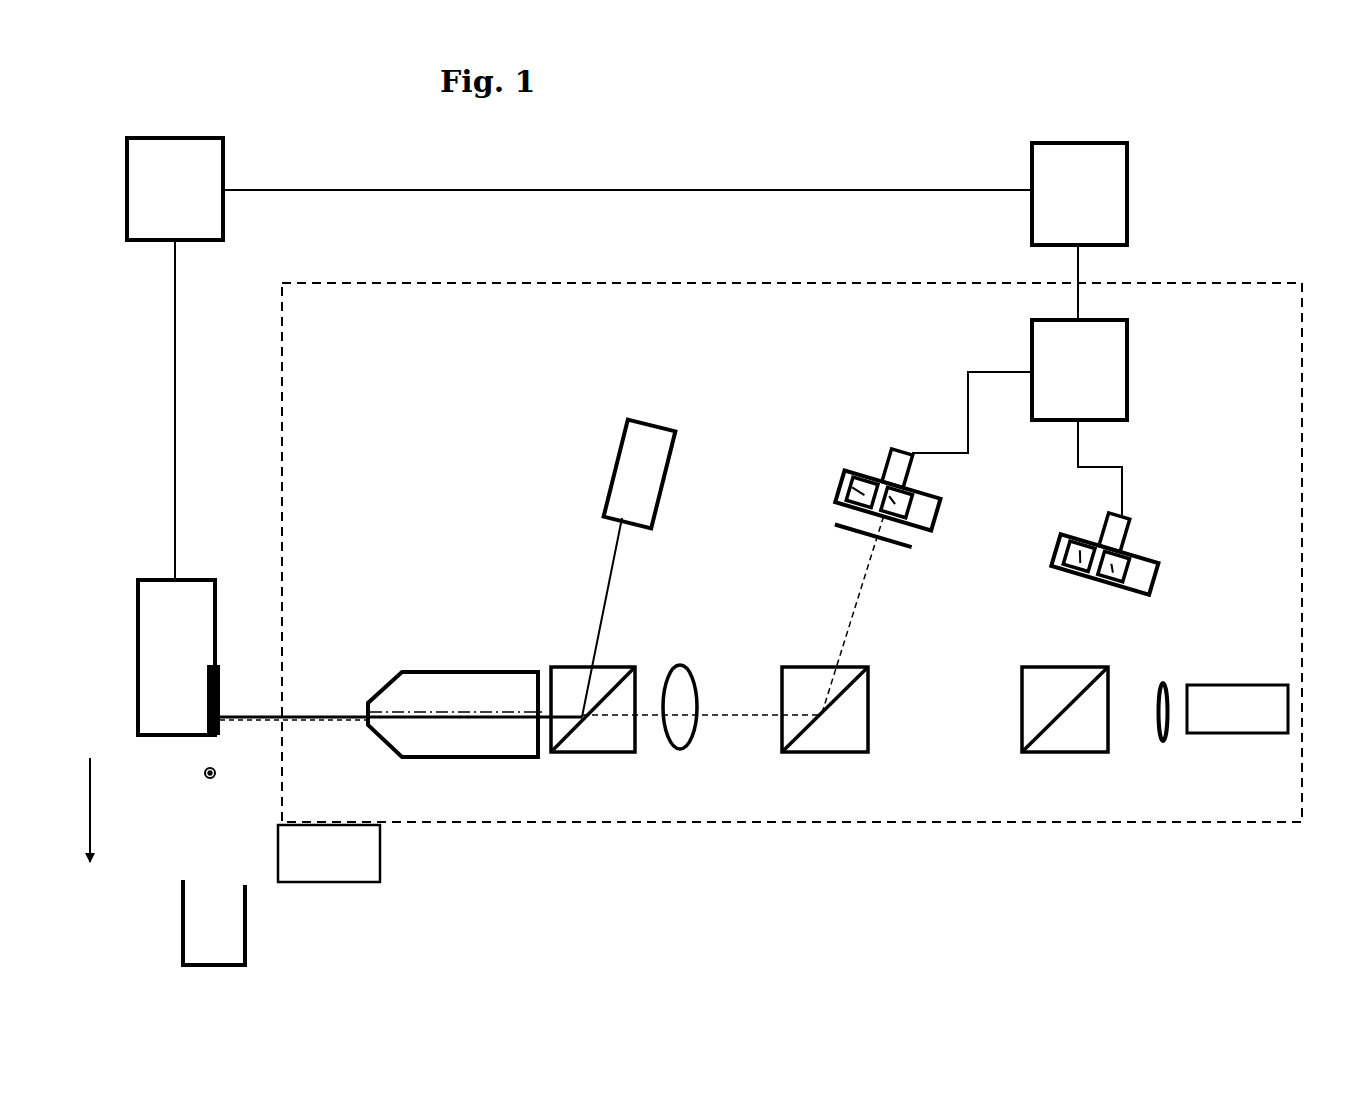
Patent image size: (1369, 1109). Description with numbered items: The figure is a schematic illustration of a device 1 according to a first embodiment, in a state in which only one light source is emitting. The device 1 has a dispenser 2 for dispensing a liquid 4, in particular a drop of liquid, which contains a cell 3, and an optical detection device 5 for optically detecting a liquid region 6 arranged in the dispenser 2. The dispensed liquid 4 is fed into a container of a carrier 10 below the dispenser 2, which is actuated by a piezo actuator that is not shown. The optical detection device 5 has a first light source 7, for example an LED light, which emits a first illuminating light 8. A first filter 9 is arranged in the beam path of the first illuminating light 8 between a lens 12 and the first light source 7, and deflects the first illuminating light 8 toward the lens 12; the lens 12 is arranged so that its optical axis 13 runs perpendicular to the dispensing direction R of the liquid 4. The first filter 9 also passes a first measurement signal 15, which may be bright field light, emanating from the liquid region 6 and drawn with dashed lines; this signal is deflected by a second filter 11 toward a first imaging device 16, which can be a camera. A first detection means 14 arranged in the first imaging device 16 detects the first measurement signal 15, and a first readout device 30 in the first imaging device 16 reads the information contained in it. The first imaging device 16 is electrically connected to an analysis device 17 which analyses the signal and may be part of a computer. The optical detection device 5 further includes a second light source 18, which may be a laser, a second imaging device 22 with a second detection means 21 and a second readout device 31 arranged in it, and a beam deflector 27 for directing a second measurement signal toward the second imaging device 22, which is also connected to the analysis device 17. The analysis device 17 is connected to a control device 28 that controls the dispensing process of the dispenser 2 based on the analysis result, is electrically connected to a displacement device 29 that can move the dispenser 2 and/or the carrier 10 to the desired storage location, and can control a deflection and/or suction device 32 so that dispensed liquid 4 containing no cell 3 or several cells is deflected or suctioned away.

The device 1 is at (1272, 177).
The dispenser 2 is at (160, 602).
The cell 3 is at (205, 773).
The liquid 4 is at (215, 776).
The optical detection device 5 is at (1202, 800).
The liquid region 6 is at (196, 707).
The first light source 7 is at (625, 478).
The first illuminating light 8 is at (607, 598).
The first filter 9 is at (618, 748).
The carrier 10 is at (237, 918).
The second filter 11 is at (845, 727).
The lens 12 is at (450, 738).
The optical axis 13 is at (415, 712).
The first detection means 14 is at (862, 492).
The first measurement signal 15 is at (858, 592).
The first imaging device 16 is at (894, 526).
The analysis device 17 is at (1100, 350).
The second light source 18 is at (1225, 700).
The second detection means 21 is at (1079, 556).
The second imaging device 22 is at (1147, 552).
The beam deflector 27 is at (1080, 727).
The control device 28 is at (1048, 168).
The displacement device 29 is at (200, 166).
The first readout device 30 is at (897, 468).
The second readout device 31 is at (1114, 532).
The deflection and/or suction device 32 is at (358, 856).